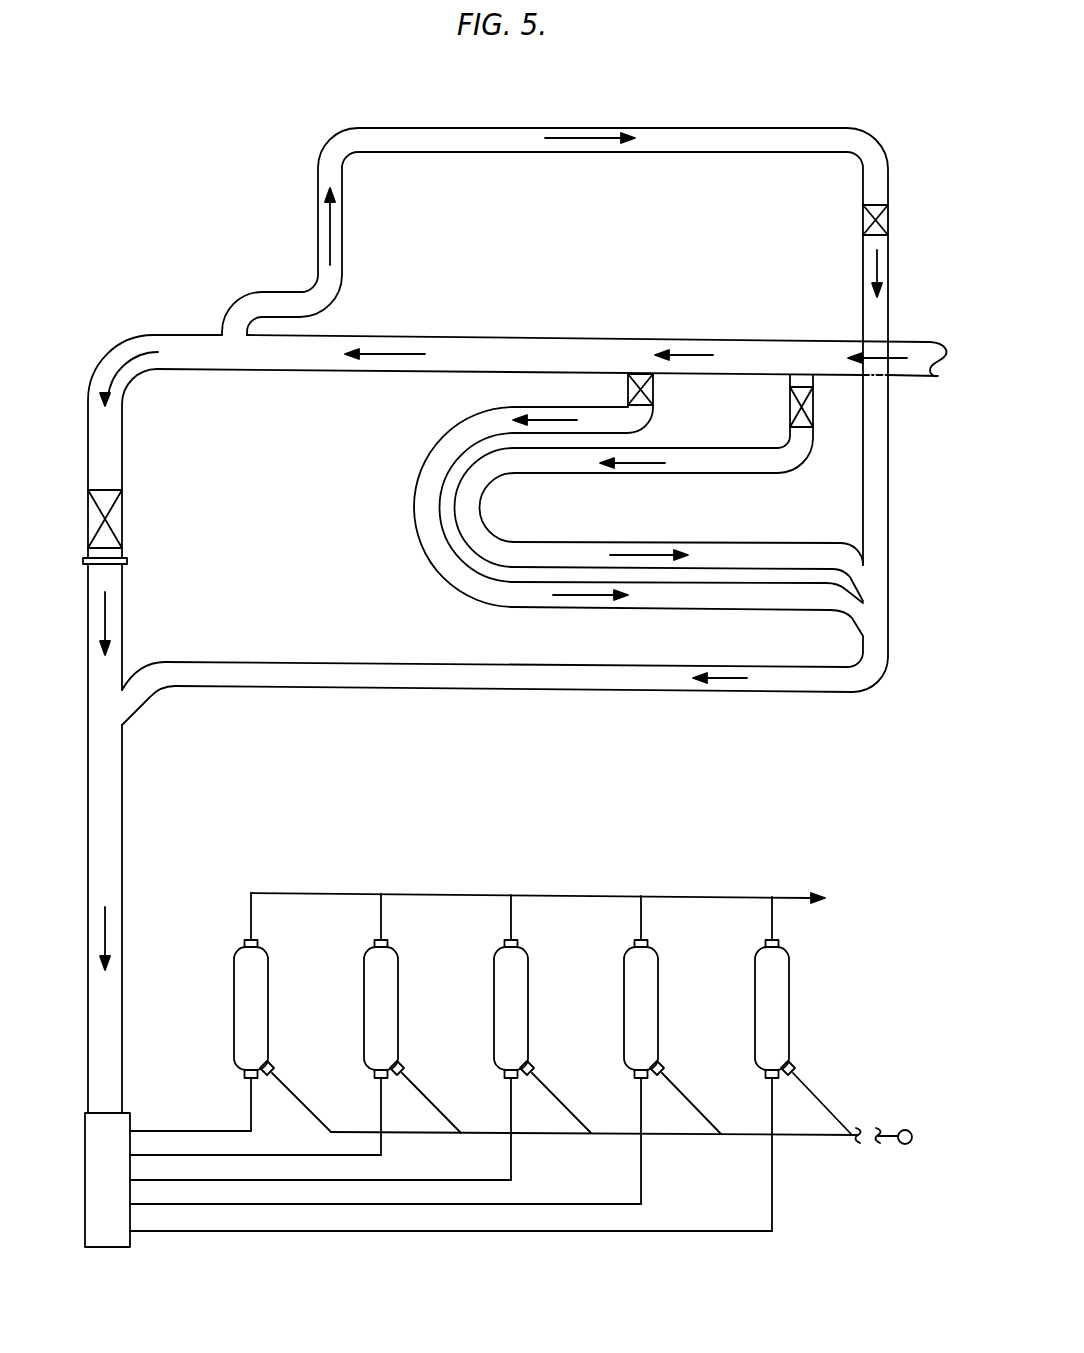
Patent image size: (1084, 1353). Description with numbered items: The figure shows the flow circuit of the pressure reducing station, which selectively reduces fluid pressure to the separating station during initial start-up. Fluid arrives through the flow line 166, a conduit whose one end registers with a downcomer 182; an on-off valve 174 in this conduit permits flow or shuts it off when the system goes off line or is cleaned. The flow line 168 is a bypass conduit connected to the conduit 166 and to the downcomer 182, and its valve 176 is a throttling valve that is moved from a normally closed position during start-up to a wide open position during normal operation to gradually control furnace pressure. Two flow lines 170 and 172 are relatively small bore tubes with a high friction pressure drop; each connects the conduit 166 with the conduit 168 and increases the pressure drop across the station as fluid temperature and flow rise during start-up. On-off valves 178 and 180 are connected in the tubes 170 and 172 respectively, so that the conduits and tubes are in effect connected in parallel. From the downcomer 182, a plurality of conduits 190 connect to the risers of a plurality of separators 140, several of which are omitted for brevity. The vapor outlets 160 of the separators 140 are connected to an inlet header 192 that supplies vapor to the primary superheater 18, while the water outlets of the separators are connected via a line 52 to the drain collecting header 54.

The primary superheater 18 is at (860, 925).
The line 52 is at (338, 1132).
The drain collecting header 54 is at (905, 1145).
The separator 140 is at (270, 1028).
The vapor outlet 160 is at (258, 945).
The flow line 166 is at (613, 337).
The flow line 168 is at (445, 127).
The flow line 170 is at (414, 480).
The flow line 172 is at (560, 476).
The valve 174 is at (88, 516).
The valve 176 is at (888, 222).
The valve 178 is at (628, 390).
The valve 180 is at (790, 405).
The downcomer 182 is at (88, 740).
The conduits 190 is at (163, 1180).
The inlet header 192 is at (460, 893).